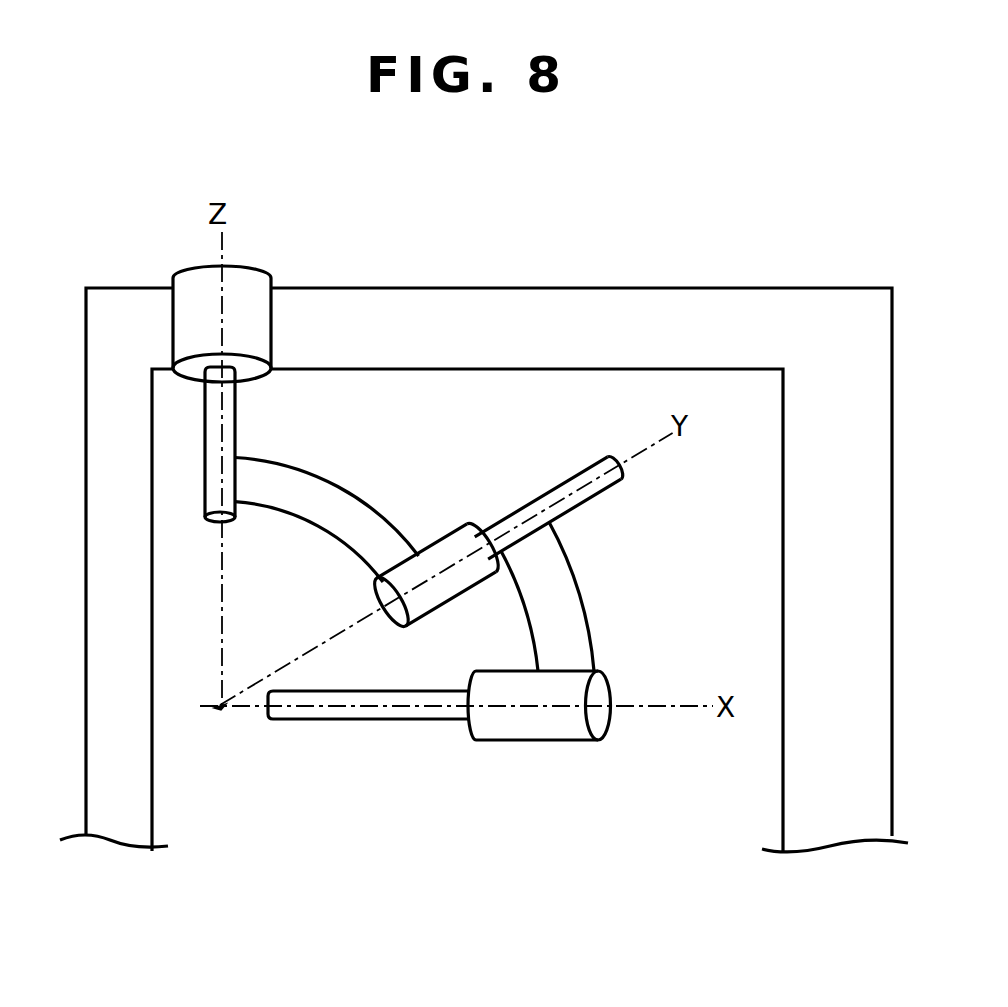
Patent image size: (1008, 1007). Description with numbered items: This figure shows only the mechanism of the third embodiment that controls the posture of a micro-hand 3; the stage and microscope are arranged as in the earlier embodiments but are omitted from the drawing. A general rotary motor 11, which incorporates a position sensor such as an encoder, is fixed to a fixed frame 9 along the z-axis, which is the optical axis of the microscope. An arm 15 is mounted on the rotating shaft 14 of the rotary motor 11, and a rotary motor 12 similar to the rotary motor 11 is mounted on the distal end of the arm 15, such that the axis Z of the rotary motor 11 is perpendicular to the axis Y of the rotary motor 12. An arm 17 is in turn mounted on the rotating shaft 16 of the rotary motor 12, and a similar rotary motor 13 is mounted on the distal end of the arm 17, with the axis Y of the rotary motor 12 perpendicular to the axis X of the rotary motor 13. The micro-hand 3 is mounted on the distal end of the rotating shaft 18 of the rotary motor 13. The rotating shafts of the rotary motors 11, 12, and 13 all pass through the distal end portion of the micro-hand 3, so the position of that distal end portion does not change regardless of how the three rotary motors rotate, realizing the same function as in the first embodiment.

The micro-hand 3 is at (216, 717).
The fixed frame 9 is at (668, 296).
The rotary motor 11 is at (262, 272).
The rotary motor 12 is at (452, 541).
The rotary motor 13 is at (540, 741).
The rotating shaft 14 is at (207, 472).
The arm 15 is at (344, 487).
The rotating shaft 16 is at (600, 495).
The arm 17 is at (580, 607).
The rotating shaft 18 is at (413, 719).